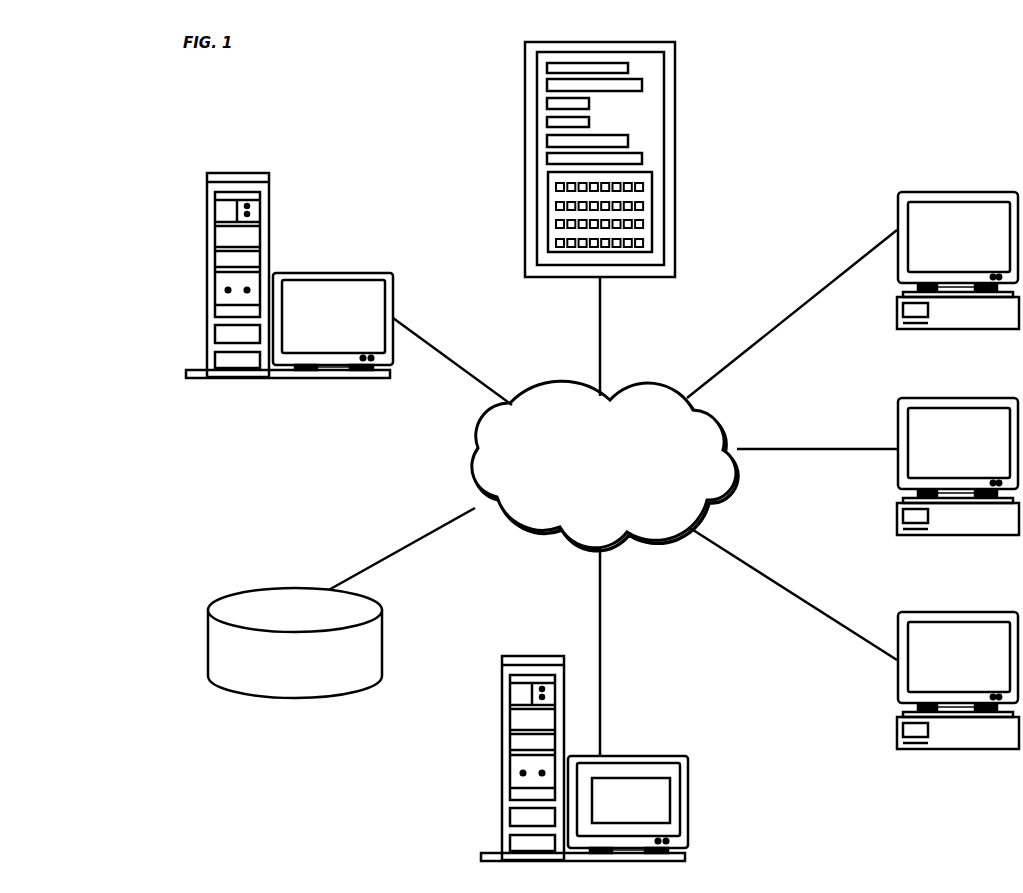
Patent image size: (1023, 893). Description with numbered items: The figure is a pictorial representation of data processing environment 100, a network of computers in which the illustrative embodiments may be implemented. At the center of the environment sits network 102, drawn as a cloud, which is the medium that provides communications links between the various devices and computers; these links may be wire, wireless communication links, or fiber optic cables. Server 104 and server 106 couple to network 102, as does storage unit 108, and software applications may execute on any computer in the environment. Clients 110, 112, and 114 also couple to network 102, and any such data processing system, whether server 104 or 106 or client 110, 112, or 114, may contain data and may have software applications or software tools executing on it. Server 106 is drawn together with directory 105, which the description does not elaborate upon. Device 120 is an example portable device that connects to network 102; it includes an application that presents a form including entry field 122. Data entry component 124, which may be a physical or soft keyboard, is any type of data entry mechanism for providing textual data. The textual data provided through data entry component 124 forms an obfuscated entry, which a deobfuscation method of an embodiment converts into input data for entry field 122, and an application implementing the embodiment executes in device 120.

The data processing environment 100 is at (134, 207).
The network 102 is at (588, 480).
The server 104 is at (341, 406).
The directory 105 is at (670, 797).
The server 106 is at (636, 888).
The storage unit 108 is at (281, 681).
The client 110 is at (1003, 559).
The client 112 is at (1003, 773).
The client 114 is at (1003, 353).
The device 120 is at (648, 31).
The entry field 122 is at (641, 158).
The data entry component 124 is at (653, 213).